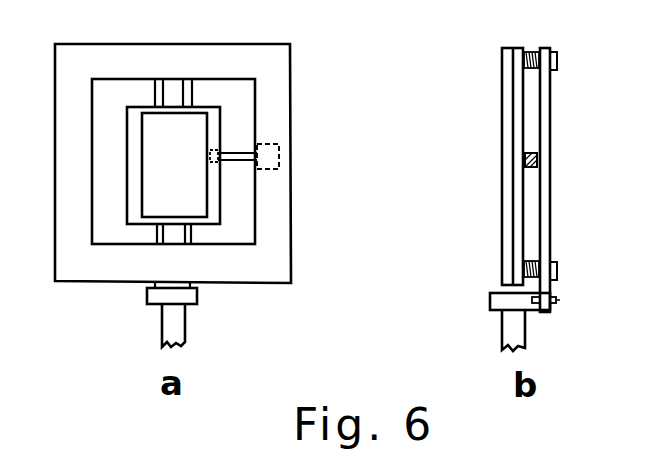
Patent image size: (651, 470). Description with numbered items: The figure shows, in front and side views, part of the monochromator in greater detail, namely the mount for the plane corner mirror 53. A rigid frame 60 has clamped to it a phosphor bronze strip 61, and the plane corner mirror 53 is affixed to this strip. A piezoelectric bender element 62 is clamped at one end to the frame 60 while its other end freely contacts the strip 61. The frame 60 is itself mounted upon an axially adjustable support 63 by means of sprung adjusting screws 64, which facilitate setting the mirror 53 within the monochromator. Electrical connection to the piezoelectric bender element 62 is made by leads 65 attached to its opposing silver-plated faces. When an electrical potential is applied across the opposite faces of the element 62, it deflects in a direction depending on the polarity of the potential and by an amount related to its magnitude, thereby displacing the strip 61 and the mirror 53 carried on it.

In FIG. 6a, the plane corner mirror 53 is at (150, 192).
In FIG. 6a, the rigid frame 60 is at (279, 55).
In FIG. 6b, the rigid frame 60 is at (508, 55).
In FIG. 6a, the phosphor bronze strip 61 is at (167, 240).
In FIG. 6a, the piezoelectric bender element 62 is at (222, 150).
In FIG. 6b, the piezoelectric bender element 62 is at (537, 158).
In FIG. 6a, the axially adjustable support 63 is at (177, 323).
In FIG. 6b, the axially adjustable support 63 is at (512, 327).
In FIG. 6b, the sprung adjusting screws 64 is at (557, 60).
In FIG. 6a, the leads 65 is at (243, 163).